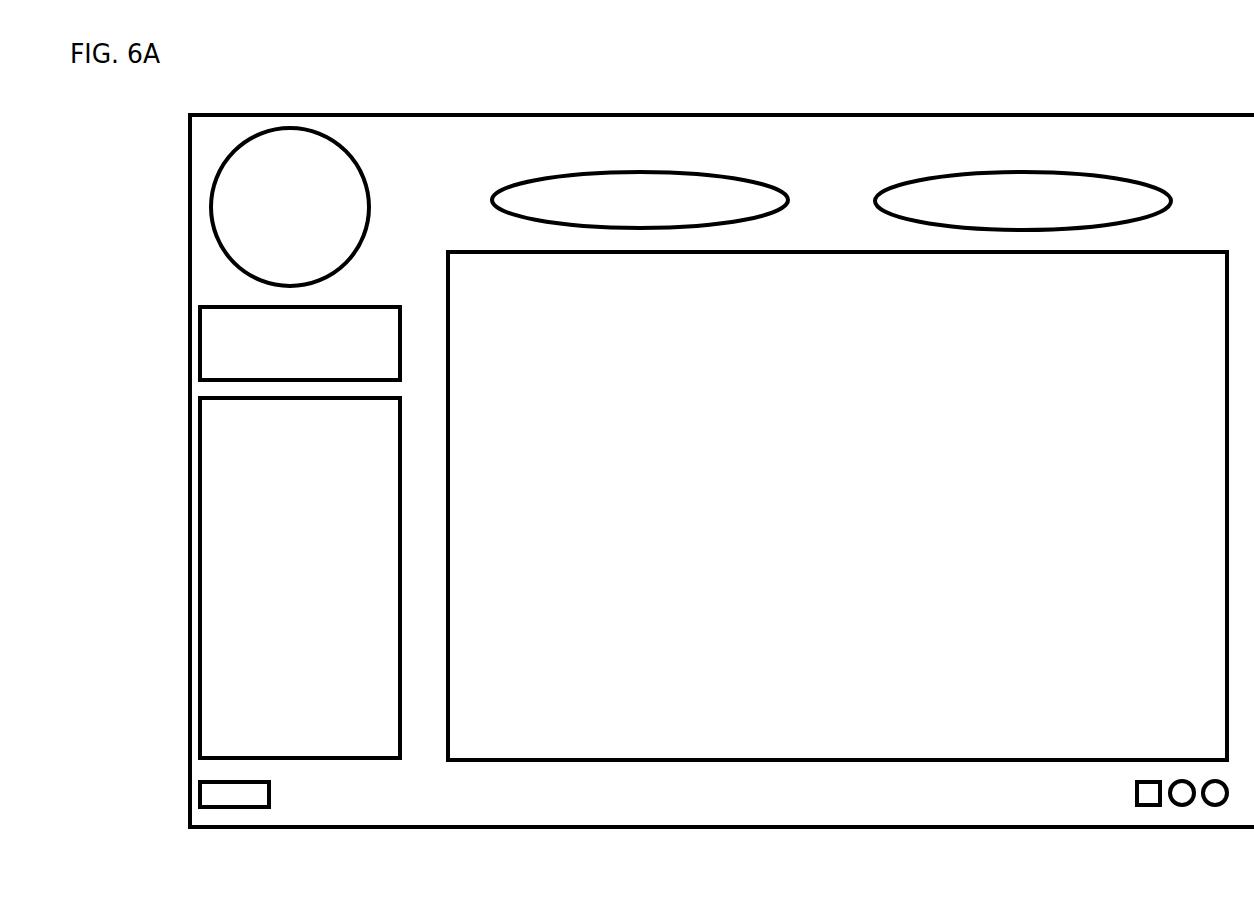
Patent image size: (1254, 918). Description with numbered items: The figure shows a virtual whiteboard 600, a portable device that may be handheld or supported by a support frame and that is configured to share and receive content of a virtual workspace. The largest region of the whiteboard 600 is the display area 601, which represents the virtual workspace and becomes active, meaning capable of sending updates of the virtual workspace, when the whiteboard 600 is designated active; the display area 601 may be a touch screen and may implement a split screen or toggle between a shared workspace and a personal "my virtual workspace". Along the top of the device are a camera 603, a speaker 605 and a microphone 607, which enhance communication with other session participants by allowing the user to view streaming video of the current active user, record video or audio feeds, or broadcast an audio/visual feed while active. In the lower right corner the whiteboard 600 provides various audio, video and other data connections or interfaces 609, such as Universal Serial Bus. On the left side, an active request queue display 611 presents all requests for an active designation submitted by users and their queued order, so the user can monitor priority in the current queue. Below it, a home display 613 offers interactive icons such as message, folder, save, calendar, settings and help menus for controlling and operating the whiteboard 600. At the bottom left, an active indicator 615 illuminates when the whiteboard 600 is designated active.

The virtual whiteboard 600 is at (887, 149).
The display area 601 is at (1196, 251).
The camera 603 is at (290, 128).
The speaker 605 is at (523, 179).
The microphone 607 is at (1140, 179).
The data connections/interfaces 609 is at (1180, 817).
The active request queue display 611 is at (199, 335).
The home display 613 is at (199, 555).
The active indicator 615 is at (199, 797).